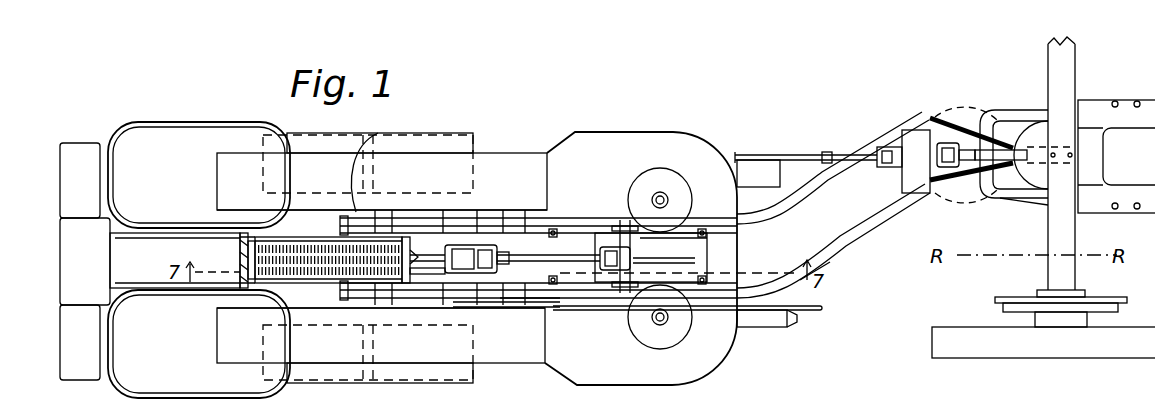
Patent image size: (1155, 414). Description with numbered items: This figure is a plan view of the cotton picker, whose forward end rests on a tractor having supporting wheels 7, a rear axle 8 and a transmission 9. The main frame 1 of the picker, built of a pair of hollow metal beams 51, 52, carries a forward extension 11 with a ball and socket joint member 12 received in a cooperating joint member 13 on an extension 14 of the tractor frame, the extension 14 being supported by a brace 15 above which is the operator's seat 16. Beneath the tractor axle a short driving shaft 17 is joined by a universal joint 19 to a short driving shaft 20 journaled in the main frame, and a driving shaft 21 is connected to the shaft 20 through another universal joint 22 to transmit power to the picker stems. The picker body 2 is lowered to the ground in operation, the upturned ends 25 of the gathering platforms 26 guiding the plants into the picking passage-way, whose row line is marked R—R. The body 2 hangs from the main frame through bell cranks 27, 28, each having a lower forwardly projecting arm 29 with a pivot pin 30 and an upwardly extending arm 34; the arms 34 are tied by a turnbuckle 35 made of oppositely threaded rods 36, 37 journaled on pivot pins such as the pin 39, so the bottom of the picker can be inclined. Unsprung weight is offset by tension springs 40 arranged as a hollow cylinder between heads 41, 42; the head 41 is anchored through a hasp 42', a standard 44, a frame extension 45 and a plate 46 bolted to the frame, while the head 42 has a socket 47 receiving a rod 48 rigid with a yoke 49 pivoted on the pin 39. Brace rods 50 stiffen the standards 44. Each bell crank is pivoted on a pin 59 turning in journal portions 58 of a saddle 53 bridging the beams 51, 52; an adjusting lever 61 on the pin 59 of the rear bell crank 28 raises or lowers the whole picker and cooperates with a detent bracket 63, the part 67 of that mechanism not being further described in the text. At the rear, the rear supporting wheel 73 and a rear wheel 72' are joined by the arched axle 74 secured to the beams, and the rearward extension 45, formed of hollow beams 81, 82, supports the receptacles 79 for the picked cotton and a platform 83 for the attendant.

The main frame 1 is at (838, 243).
The body of the picker mechanism 2 is at (727, 357).
The supporting wheels 7 is at (1050, 350).
The rear axle 8 is at (1053, 270).
The transmission 9 is at (1113, 137).
The forward extension 11 is at (940, 123).
The ball and socket joint member 12 is at (1003, 115).
The cooperating joint member 13 is at (1012, 120).
The extension of the tractor frame 14 is at (1030, 207).
The brace 15 is at (1007, 195).
The seat 16 is at (927, 193).
The short driving shaft 17 is at (970, 167).
The universal joint 19 is at (960, 110).
The short driving shaft 20 is at (895, 148).
The driving shaft 21 is at (773, 153).
The universal joint 22 is at (883, 150).
The upturned ends 25 is at (800, 316).
The gathering platforms 26 is at (748, 193).
The bell crank 27 is at (657, 257).
The bell crank 28 is at (507, 250).
The lower forwardly projecting arm 29 is at (530, 232).
The pivot pin 30 is at (707, 239).
The upwardly extending arm 34 is at (480, 222).
The turnbuckle 35 is at (604, 250).
The screw-threaded rod 36 is at (548, 312).
The screw-threaded rod 37 is at (542, 245).
The pivot pin 39 is at (500, 248).
The tension springs 40 is at (258, 286).
The head 41 is at (238, 272).
The head 42 is at (426, 215).
The hasp 42' is at (195, 244).
The standard 44 is at (242, 252).
The frame extension 45 is at (246, 240).
The plate 46 is at (377, 230).
The socket 47 is at (400, 282).
The rod 48 is at (430, 267).
The yoke 49 is at (441, 240).
The brace rod 50 is at (290, 233).
The hollow metal beam 51 is at (813, 153).
The hollow metal beam 52 is at (828, 268).
The saddle 53 is at (437, 300).
The journal portions 58 is at (632, 282).
The pivot pin 59 is at (467, 307).
The adjusting lever 61 is at (603, 310).
The detent bracket 63 is at (553, 303).
The bottom plate 67 is at (628, 386).
The lower plate 72' is at (404, 380).
The rear supporting wheel 73 is at (447, 138).
The axle 74 is at (380, 142).
The receptacles 79 is at (153, 136).
The hollow beam 81 is at (306, 240).
The hollow beam 82 is at (290, 285).
The platform 83 is at (60, 326).